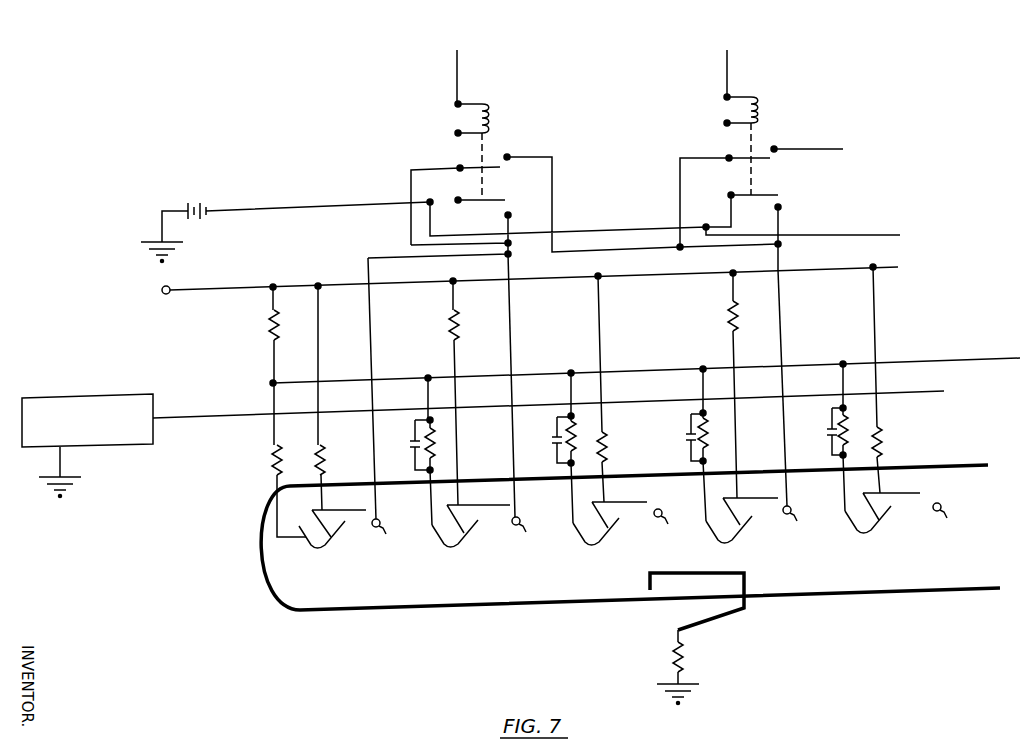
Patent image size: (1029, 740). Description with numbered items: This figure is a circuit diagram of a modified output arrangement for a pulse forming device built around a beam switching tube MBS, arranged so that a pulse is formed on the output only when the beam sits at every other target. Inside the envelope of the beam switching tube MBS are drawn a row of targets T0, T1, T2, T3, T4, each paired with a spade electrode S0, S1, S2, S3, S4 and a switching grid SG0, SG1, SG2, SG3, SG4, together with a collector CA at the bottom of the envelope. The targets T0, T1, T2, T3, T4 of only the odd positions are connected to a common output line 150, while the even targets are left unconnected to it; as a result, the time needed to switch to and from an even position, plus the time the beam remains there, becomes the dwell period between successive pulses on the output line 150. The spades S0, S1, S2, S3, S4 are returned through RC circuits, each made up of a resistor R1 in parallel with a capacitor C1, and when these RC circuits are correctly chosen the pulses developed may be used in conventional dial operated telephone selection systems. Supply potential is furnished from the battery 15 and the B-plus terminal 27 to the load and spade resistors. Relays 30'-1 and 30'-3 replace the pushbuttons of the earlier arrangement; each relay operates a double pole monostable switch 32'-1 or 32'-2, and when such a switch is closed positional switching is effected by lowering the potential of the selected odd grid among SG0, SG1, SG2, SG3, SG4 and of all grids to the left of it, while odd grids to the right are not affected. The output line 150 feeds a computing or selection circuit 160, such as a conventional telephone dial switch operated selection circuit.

The battery 15 is at (285, 224).
The B+ supply terminal 27 is at (170, 286).
The common output line 150 is at (200, 413).
The computing or selection circuit 160 is at (117, 395).
The relay 30'-1 is at (490, 123).
The relay 30'-3 is at (759, 122).
The double pole monostable switch 32'-1 is at (634, 201).
The double pole monostable switch 32'-2 is at (760, 208).
The capacitor C1 is at (679, 439).
The resistor R1 is at (710, 446).
The beam switching tube MBS is at (858, 594).
The collector anode CA is at (727, 612).
The target electrode 0 T0 is at (336, 499).
The target electrode 1 T1 is at (473, 495).
The target electrode 2 T2 is at (618, 491).
The target electrode 3 T3 is at (750, 511).
The target electrode 4 T4 is at (890, 494).
The spade electrode 0 S0 is at (312, 553).
The spade electrode 1 S1 is at (447, 549).
The spade electrode 2 S2 is at (592, 547).
The spade electrode 3 S3 is at (742, 538).
The spade electrode 4 S4 is at (868, 540).
The switching grid 0 SG0 is at (387, 539).
The switching grid 1 SG1 is at (526, 537).
The switching grid 2 SG2 is at (667, 532).
The switching grid 3 SG3 is at (796, 527).
The switching grid 4 SG4 is at (947, 524).